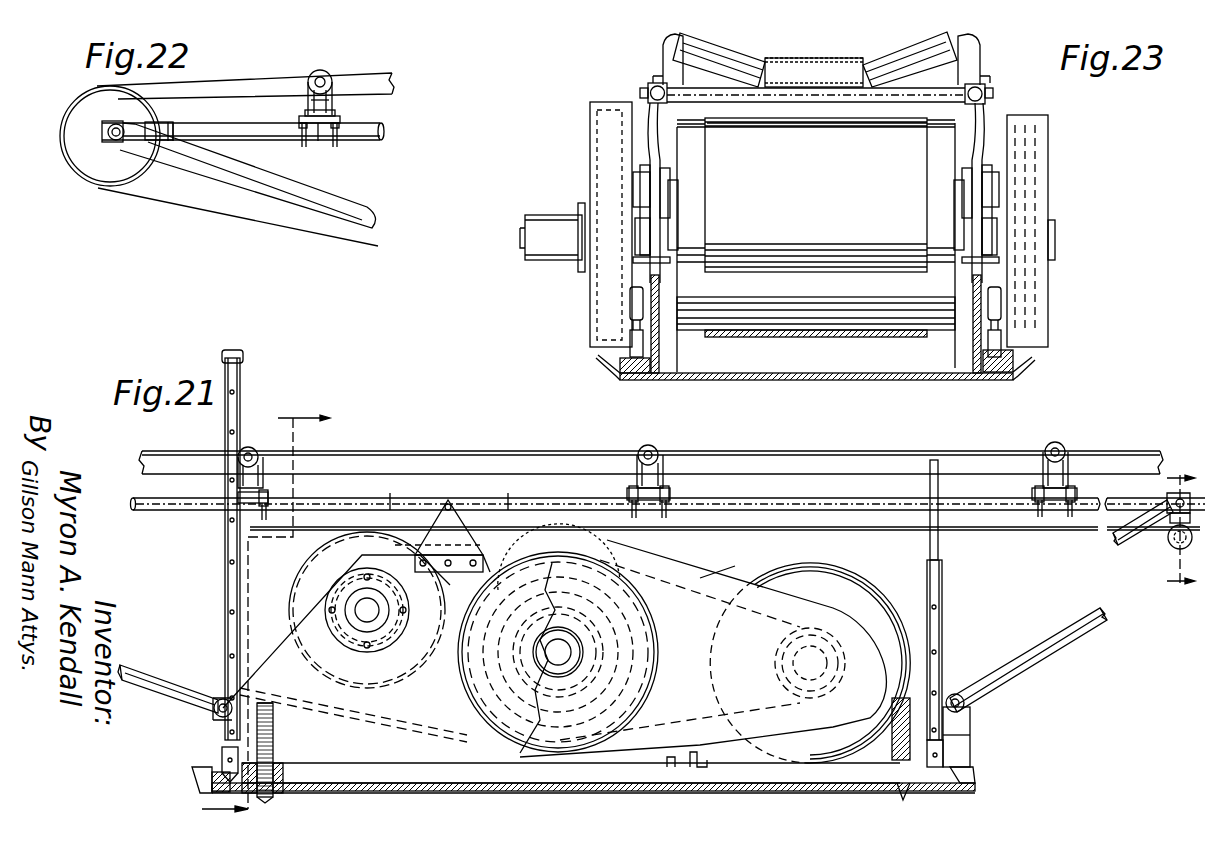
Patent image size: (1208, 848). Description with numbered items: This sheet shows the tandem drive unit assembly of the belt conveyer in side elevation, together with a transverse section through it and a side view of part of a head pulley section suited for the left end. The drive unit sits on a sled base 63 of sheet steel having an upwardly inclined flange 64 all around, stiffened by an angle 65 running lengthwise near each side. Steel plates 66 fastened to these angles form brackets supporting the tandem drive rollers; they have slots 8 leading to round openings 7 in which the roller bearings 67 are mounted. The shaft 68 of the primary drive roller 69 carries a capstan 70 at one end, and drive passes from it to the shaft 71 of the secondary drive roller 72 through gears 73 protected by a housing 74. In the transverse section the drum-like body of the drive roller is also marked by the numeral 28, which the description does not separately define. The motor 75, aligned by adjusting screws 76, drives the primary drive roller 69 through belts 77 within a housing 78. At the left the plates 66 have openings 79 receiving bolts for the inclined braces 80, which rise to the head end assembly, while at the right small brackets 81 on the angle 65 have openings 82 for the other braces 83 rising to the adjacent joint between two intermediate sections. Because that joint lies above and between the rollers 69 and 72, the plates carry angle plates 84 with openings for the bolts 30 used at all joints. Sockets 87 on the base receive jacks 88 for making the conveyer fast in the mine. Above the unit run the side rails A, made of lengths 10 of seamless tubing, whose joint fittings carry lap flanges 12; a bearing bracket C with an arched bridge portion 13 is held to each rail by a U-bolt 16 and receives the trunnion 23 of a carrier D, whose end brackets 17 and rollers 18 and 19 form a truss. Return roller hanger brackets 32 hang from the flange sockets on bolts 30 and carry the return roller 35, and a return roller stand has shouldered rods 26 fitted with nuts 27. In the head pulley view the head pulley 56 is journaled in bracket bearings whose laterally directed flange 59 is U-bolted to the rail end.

In FIG. 21, the round openings 7 is at (345, 636).
In FIG. 23, the slots 8 is at (982, 175).
In FIG. 21, the slots 8 is at (335, 583).
In FIG. 22, the lengths of seamless steel tubing 10 is at (372, 141).
In FIG. 23, the lengths of seamless steel tubing 10 is at (983, 84).
In FIG. 21, the lengths of seamless steel tubing 10 is at (1100, 500).
In FIG. 22, the lap flange 12 is at (118, 126).
In FIG. 21, the lap flange 12 is at (1170, 500).
In FIG. 22, the arched bridge portion 13 is at (306, 106).
In FIG. 22, the U-bolt 16 is at (298, 156).
In FIG. 23, the end brackets 17 is at (973, 50).
In FIG. 22, the rollers 18 is at (321, 70).
In FIG. 23, the rollers 18 is at (897, 30).
In FIG. 23, the rollers 19 is at (812, 55).
In FIG. 22, the lug or trunnion 23 is at (320, 142).
In FIG. 21, the lug or trunnion 23 is at (264, 603).
In FIG. 21, the shouldered rods 26 is at (446, 493).
In FIG. 21, the nuts 27 is at (1181, 531).
In FIG. 23, the drive drum 28 is at (755, 100).
In FIG. 22, the bolt 30 is at (100, 128).
In FIG. 23, the bolt 30 is at (993, 92).
In FIG. 21, the bolt 30 is at (447, 503).
In FIG. 21, the return roller hanger bracket 32 is at (1175, 530).
In FIG. 21, the return roller 35 is at (1180, 549).
In FIG. 22, the head pulley 56 is at (88, 172).
In FIG. 22, the laterally directed flange 59 is at (183, 119).
In FIG. 23, the sled base 63 is at (830, 380).
In FIG. 21, the sled base 63 is at (437, 793).
In FIG. 23, the upwardly inclined flange 64 is at (1022, 370).
In FIG. 21, the upwardly inclined flange 64 is at (975, 780).
In FIG. 23, the angle 65 is at (982, 386).
In FIG. 21, the angle 65 is at (368, 752).
In FIG. 23, the steel plates 66 is at (970, 325).
In FIG. 23, the roller bearings 67 is at (1000, 198).
In FIG. 21, the roller bearings 67 is at (330, 610).
In FIG. 23, the shaft 68 is at (678, 232).
In FIG. 21, the shaft 68 is at (548, 653).
In FIG. 23, the primary drive roller 69 is at (752, 312).
In FIG. 21, the primary drive roller 69 is at (562, 550).
In FIG. 23, the capstan 70 is at (555, 248).
In FIG. 23, the shaft 71 is at (972, 185).
In FIG. 21, the shaft 71 is at (372, 616).
In FIG. 23, the secondary drive roller 72 is at (692, 125).
In FIG. 21, the secondary drive roller 72 is at (318, 562).
In FIG. 23, the gears 73 is at (597, 116).
In FIG. 23, the housing 74 is at (590, 132).
In FIG. 21, the motor 75 is at (848, 582).
In FIG. 21, the adjusting screws 76 is at (676, 758).
In FIG. 23, the belts 77 is at (1040, 140).
In FIG. 21, the belts 77 is at (715, 590).
In FIG. 23, the housing 78 is at (1050, 148).
In FIG. 21, the housing 78 is at (735, 572).
In FIG. 21, the openings 79 is at (214, 712).
In FIG. 22, the inclined braces 80 is at (357, 212).
In FIG. 21, the inclined braces 80 is at (158, 680).
In FIG. 21, the small brackets 81 is at (970, 742).
In FIG. 21, the openings 82 is at (970, 720).
In FIG. 21, the braces 83 is at (1115, 550).
In FIG. 23, the angle plates 84 is at (985, 122).
In FIG. 21, the angle plates 84 is at (460, 527).
In FIG. 21, the sockets 87 is at (212, 782).
In FIG. 21, the jacks 88 is at (942, 588).
In FIG. 22, the side rails A is at (384, 131).
In FIG. 22, the bearing bracket C is at (340, 116).
In FIG. 21, the bearing bracket C is at (1032, 492).
In FIG. 22, the carriers D is at (349, 75).
In FIG. 21, the carriers D is at (1066, 437).